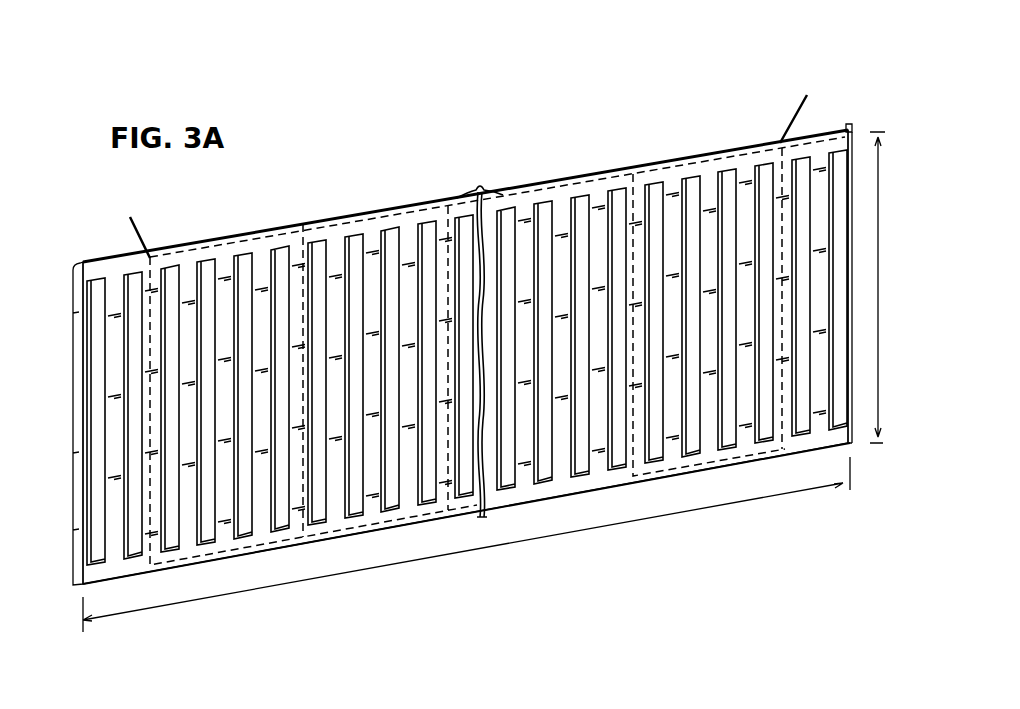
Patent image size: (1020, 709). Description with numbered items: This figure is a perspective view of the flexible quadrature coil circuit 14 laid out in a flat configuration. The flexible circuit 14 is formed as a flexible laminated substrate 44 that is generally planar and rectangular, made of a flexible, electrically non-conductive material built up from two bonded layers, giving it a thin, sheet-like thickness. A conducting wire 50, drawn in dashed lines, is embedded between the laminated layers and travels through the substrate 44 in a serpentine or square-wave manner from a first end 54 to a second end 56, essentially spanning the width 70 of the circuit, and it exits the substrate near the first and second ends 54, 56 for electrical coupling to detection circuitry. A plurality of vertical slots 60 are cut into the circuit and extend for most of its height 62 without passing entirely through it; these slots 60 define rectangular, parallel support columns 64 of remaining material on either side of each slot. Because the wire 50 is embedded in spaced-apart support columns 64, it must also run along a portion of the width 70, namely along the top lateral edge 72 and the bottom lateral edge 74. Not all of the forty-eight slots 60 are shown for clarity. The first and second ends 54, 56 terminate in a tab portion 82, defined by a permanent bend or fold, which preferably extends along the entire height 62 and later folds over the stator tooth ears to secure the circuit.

The flexible quadrature coil circuit 14 is at (273, 560).
The flexible laminated substrate 44 is at (367, 215).
The conducting wire 50 is at (137, 222).
The first end 54 is at (95, 267).
The second end 56 is at (857, 445).
The slots 60 is at (317, 252).
The height 62 is at (873, 158).
The support columns 64 is at (414, 282).
The width 70 is at (507, 545).
The top lateral edge 72 is at (640, 157).
The bottom lateral edge 74 is at (405, 528).
The tab portion 82 is at (75, 558).